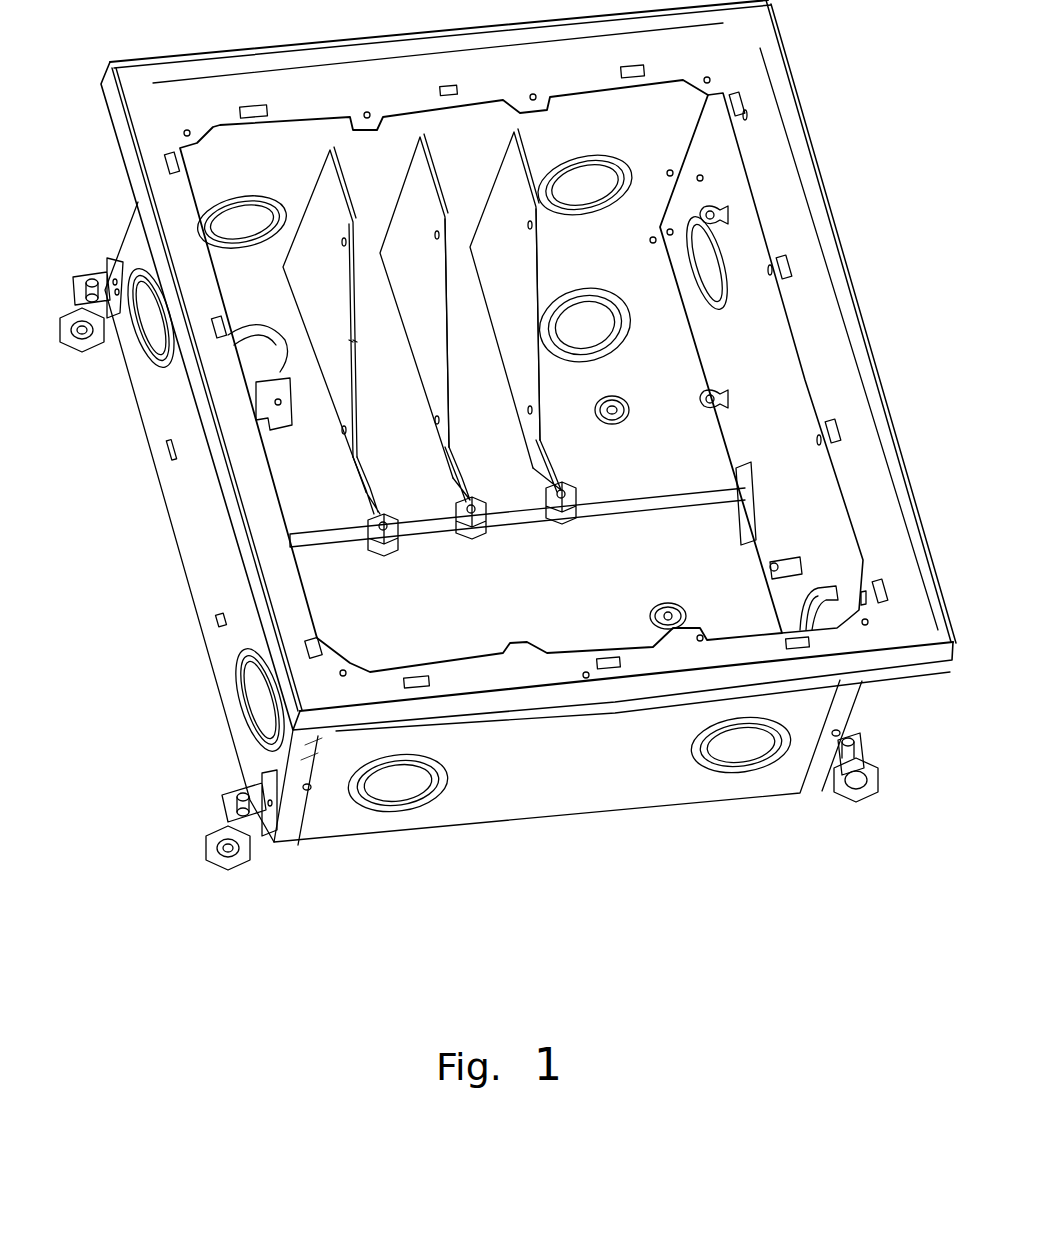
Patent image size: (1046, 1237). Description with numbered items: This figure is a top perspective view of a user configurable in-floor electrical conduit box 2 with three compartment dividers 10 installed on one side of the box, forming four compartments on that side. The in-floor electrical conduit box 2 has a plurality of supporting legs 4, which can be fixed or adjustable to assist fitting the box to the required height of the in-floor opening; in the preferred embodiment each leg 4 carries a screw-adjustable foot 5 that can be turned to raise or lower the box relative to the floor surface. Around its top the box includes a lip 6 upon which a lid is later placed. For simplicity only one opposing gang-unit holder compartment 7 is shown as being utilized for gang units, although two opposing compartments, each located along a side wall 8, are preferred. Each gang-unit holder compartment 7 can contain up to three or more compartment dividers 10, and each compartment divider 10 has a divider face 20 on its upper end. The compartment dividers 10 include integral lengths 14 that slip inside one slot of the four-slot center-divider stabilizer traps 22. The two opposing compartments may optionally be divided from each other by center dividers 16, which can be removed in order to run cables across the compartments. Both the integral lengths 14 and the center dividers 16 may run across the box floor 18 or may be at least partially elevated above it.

The in-floor electrical conduit box 2 is at (124, 238).
The supporting leg 4 is at (103, 286).
The screw-adjustable foot 5 is at (92, 350).
The lip 6 is at (376, 50).
The gang-unit holder compartment 7 is at (523, 376).
The side wall 8 is at (525, 455).
The compartment divider 10 is at (411, 310).
The integral length 14 is at (440, 478).
The center divider 16 is at (346, 546).
The box floor 18 is at (630, 401).
The divider face 20 is at (352, 368).
The four-slot center-divider stabilizer trap 22 is at (566, 536).